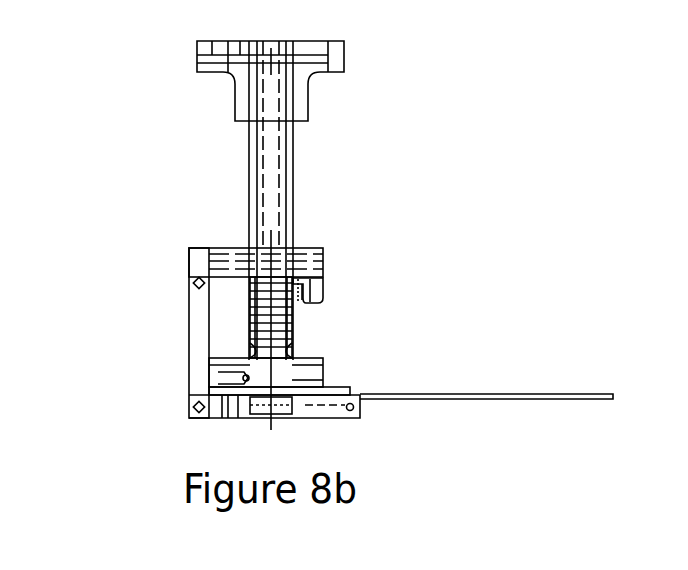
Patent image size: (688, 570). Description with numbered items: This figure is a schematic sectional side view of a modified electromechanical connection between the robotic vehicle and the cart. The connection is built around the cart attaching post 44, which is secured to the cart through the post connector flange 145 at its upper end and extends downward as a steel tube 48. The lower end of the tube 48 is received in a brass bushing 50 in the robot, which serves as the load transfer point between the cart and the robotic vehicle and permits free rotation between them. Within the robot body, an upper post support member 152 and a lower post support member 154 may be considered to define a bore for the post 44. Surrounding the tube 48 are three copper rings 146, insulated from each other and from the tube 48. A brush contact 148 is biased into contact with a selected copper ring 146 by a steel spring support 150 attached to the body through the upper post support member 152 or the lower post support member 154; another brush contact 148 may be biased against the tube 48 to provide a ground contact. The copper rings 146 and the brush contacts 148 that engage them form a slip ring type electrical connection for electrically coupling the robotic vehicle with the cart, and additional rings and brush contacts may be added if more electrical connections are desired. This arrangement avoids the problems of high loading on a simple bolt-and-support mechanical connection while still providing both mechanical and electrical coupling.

The cart attaching post 44 is at (440, 262).
The post connector flange 145 is at (303, 91).
The steel tube 48 is at (287, 185).
The upper post support member 152 is at (321, 248).
The copper rings 146 is at (250, 290).
The steel spring support 150 is at (325, 289).
The brush contact 148 is at (220, 378).
The lower post support member 154 is at (323, 373).
The brass bushing 50 is at (340, 418).